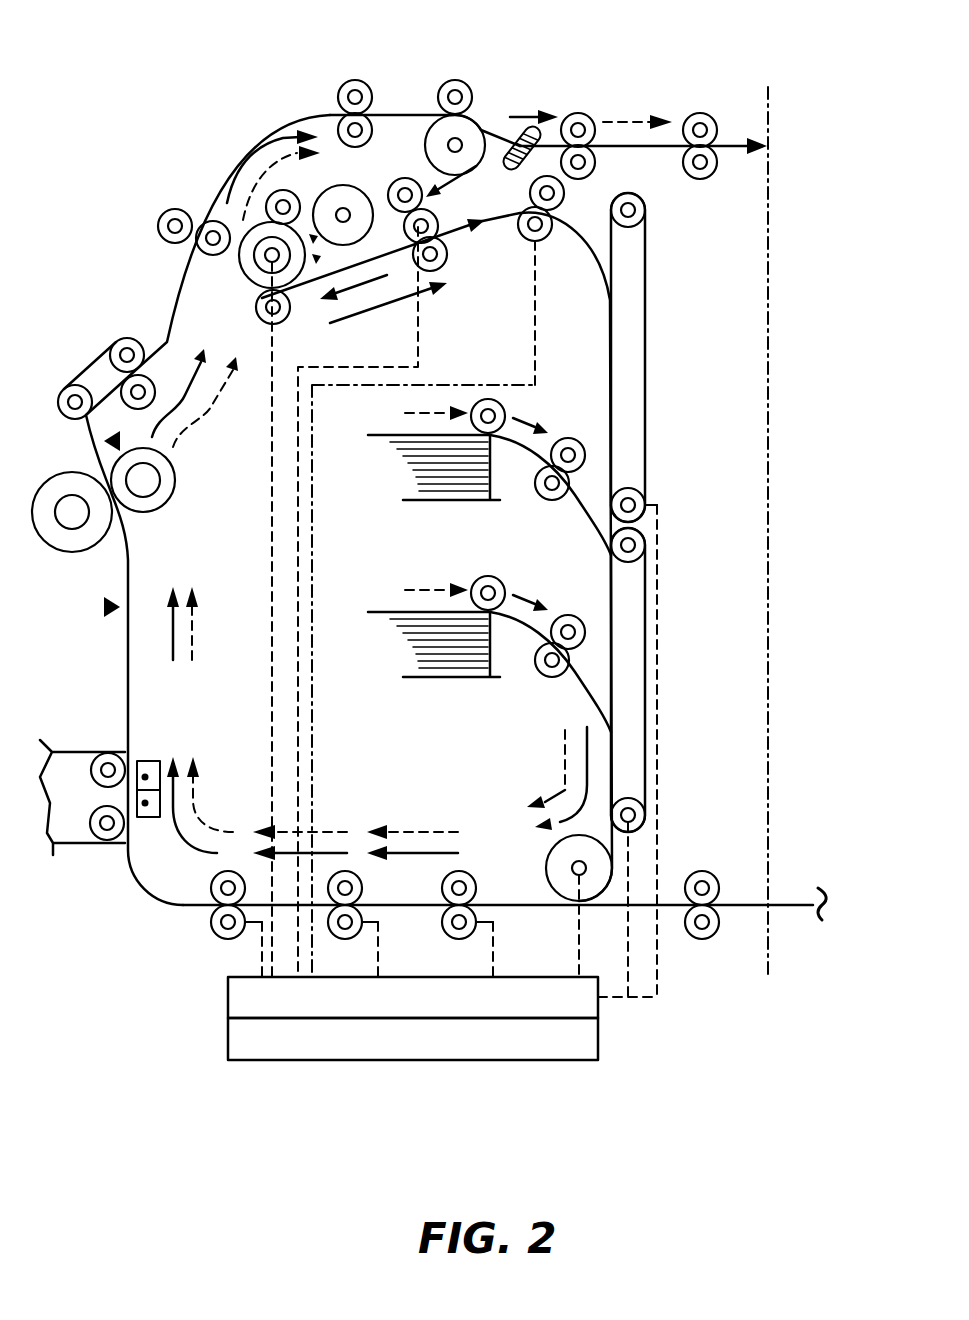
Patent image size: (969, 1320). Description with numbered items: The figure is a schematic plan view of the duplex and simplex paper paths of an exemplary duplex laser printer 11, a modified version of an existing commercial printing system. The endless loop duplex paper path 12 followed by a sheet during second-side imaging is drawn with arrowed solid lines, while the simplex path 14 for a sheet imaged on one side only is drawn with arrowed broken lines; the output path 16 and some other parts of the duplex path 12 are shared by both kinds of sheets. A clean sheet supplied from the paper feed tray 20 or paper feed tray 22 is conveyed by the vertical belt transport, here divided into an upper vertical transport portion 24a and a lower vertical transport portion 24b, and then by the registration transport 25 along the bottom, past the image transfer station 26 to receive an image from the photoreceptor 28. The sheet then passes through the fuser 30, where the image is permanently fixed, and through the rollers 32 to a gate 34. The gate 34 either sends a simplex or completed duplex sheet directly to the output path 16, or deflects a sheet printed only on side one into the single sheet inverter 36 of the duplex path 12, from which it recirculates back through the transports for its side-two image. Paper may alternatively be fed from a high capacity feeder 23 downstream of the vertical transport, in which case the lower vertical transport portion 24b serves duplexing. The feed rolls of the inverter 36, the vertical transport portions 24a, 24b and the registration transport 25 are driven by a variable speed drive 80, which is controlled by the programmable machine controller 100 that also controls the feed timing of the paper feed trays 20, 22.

The duplex laser printer 11 is at (410, 55).
The duplex paper path 12 is at (265, 145).
The simplex path 14 is at (247, 187).
The output path 16 is at (737, 127).
The paper feed tray 20 is at (443, 503).
The paper feed tray 22 is at (443, 680).
The high capacity feeder 23 is at (810, 912).
The upper vertical transport portion 24a is at (612, 408).
The lower vertical transport portion 24b is at (612, 652).
The registration transport 25 is at (518, 870).
The image transfer station 26 is at (158, 740).
The photoreceptor 28 is at (68, 847).
The fuser 30 is at (197, 497).
The rollers 32 is at (417, 140).
The gate 34 is at (520, 113).
The single sheet inverter 36 is at (360, 262).
The variable speed drive 80 is at (227, 990).
The programmable machine controller 100 is at (250, 1048).